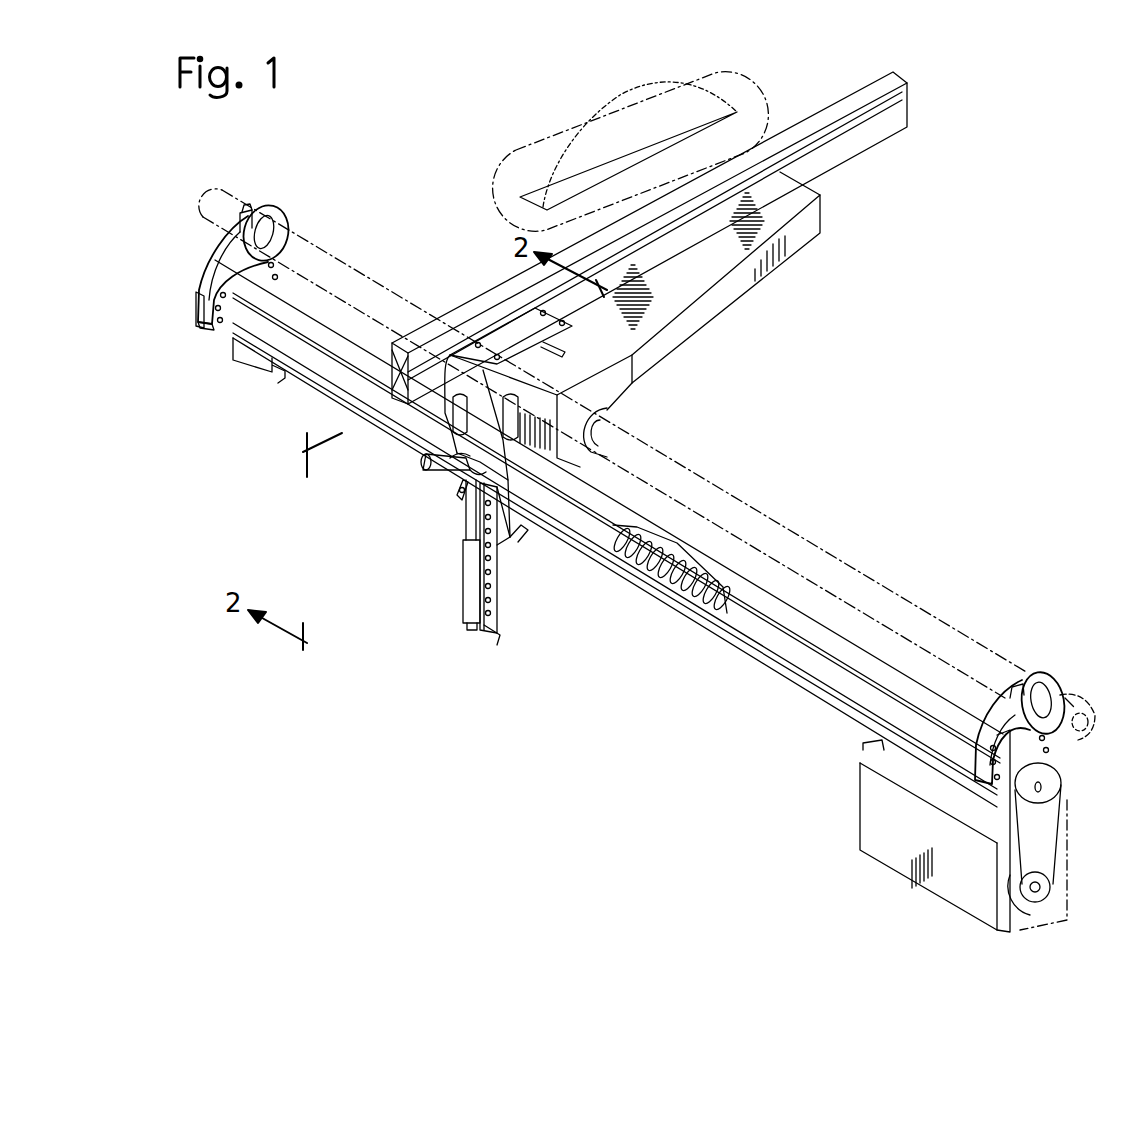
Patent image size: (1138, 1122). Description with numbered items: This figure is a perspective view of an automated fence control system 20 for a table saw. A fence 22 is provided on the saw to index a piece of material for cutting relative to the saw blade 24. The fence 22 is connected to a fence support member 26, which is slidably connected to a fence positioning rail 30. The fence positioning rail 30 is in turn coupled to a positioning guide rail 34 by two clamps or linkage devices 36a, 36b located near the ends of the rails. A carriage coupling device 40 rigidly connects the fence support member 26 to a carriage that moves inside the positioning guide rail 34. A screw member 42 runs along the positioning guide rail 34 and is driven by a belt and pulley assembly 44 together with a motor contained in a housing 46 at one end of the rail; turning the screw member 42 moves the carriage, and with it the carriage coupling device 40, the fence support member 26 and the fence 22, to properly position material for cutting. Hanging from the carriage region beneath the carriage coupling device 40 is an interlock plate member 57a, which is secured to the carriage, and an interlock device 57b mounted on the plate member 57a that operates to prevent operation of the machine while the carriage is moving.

The fence control system 20 is at (922, 260).
The fence 22 is at (905, 122).
The saw blade 24 is at (623, 103).
The fence support member 26 is at (682, 292).
The fence positioning rail 30 is at (726, 486).
The positioning guide rail 34 is at (770, 633).
The clamp or linkage device 36a is at (1027, 737).
The clamp or linkage device 36b is at (242, 278).
The carriage coupling device 40 is at (510, 340).
The screw member 42 is at (663, 570).
The belt and pulley assembly 44 is at (1048, 790).
The housing 46 is at (865, 820).
The interlock plate member 57a is at (500, 573).
The interlock device 57b is at (463, 560).